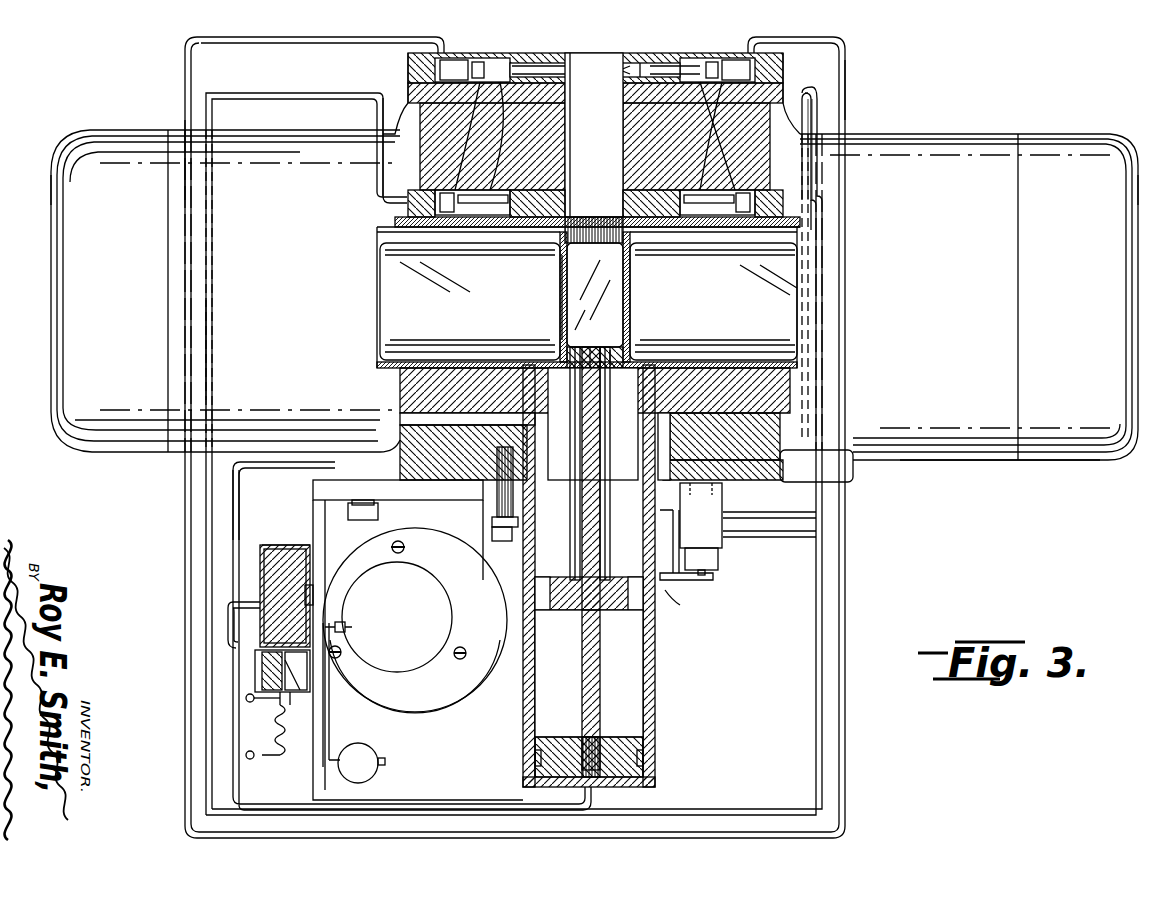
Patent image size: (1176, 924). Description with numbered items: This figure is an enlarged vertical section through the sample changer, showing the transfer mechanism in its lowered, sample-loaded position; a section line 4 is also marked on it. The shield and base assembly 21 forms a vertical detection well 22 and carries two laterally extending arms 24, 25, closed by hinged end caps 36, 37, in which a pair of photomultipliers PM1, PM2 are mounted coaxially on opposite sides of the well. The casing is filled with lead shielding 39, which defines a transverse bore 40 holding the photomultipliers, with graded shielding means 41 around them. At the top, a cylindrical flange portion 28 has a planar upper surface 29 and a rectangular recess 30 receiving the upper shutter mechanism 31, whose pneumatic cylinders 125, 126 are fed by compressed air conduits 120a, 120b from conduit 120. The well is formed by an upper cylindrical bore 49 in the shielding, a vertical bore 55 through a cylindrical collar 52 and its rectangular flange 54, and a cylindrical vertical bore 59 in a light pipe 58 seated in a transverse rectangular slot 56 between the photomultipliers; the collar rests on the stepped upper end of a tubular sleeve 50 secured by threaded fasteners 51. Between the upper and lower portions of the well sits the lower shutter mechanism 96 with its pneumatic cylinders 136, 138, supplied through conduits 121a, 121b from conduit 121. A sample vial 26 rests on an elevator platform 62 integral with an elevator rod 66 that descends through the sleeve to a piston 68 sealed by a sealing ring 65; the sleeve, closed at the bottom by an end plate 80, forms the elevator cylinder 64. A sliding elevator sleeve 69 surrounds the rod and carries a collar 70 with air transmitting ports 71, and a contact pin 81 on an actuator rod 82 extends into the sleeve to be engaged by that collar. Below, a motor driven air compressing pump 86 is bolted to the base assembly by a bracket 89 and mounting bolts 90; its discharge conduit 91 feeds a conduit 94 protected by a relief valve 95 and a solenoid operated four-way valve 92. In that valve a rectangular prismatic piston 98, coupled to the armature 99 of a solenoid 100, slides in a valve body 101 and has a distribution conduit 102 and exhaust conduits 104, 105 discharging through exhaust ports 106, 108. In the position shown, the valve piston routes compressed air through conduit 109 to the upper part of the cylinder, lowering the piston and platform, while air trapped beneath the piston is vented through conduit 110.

The section line 4 is at (460, 178).
The shield and base assembly 21 is at (986, 484).
The detection well 22 is at (604, 137).
The arm 24 is at (272, 130).
The arm 25 is at (950, 134).
The sample vial 26 is at (606, 299).
The flange portion 28 is at (785, 58).
The planar upper surface 29 is at (655, 60).
The rectangular recess 30 is at (700, 62).
The shutter mechanism 31 is at (598, 60).
The end cap 36 is at (53, 176).
The end cap 37 is at (1138, 185).
The shielding material 39 is at (387, 98).
The transverse bore 40 is at (805, 232).
The graded shielding means 41 is at (805, 250).
The upper cylindrical bore 49 is at (568, 118).
The tubular sleeve 50 is at (657, 670).
The threaded fasteners 51 is at (500, 518).
The cylindrical collar 52 is at (545, 375).
The rectangular flange 54 is at (560, 240).
The vertical bore 55 is at (625, 342).
The transverse rectangular slot 56 is at (565, 330).
The light pipe 58 is at (632, 260).
The cylindrical vertical bore 59 is at (560, 268).
The elevator platform 62 is at (622, 330).
The elevator cylinder 64 is at (657, 720).
The sealing ring 65 is at (535, 755).
The elevator rod 66 is at (575, 676).
The piston 68 is at (612, 735).
The sliding elevator sleeve 69 is at (575, 495).
The collar 70 is at (640, 615).
The air transmitting ports 71 is at (548, 580).
The end plate 80 is at (640, 790).
The contact pin 81 is at (625, 425).
The actuator rod 82 is at (695, 580).
The motor driven air compressing pump 86 is at (405, 580).
The bracket 89 is at (415, 700).
The mounting bolts 90 is at (378, 512).
The discharge conduit 91 is at (347, 632).
The solenoid operated four-way valve 92 is at (258, 668).
The conduit 94 is at (323, 735).
The relief valve 95 is at (385, 762).
The lower shutter mechanism 96 is at (576, 212).
The piston 98 is at (258, 612).
The armature 99 is at (290, 695).
The solenoid 100 is at (278, 712).
The valve body 101 is at (262, 592).
The distribution conduit 102 is at (312, 580).
The exhaust conduit 104 is at (300, 545).
The exhaust conduit 105 is at (258, 652).
The exhaust port 106 is at (270, 545).
The exhaust port 108 is at (285, 692).
The conduit 109 is at (243, 468).
The conduit 110 is at (252, 760).
The conduit 120 is at (805, 538).
The compressed air conduit 120a is at (849, 60).
The compressed air conduit 120b is at (330, 40).
The conduit 121 is at (785, 510).
The conduit 121a is at (828, 110).
The conduit 121b is at (292, 94).
The pneumatic cylinder 125 is at (740, 58).
The pneumatic cylinder 126 is at (480, 58).
The pneumatic cylinder 136 is at (745, 182).
The pneumatic cylinder 138 is at (450, 182).
The photomultiplier PM1 is at (485, 309).
The photomultiplier PM2 is at (748, 294).